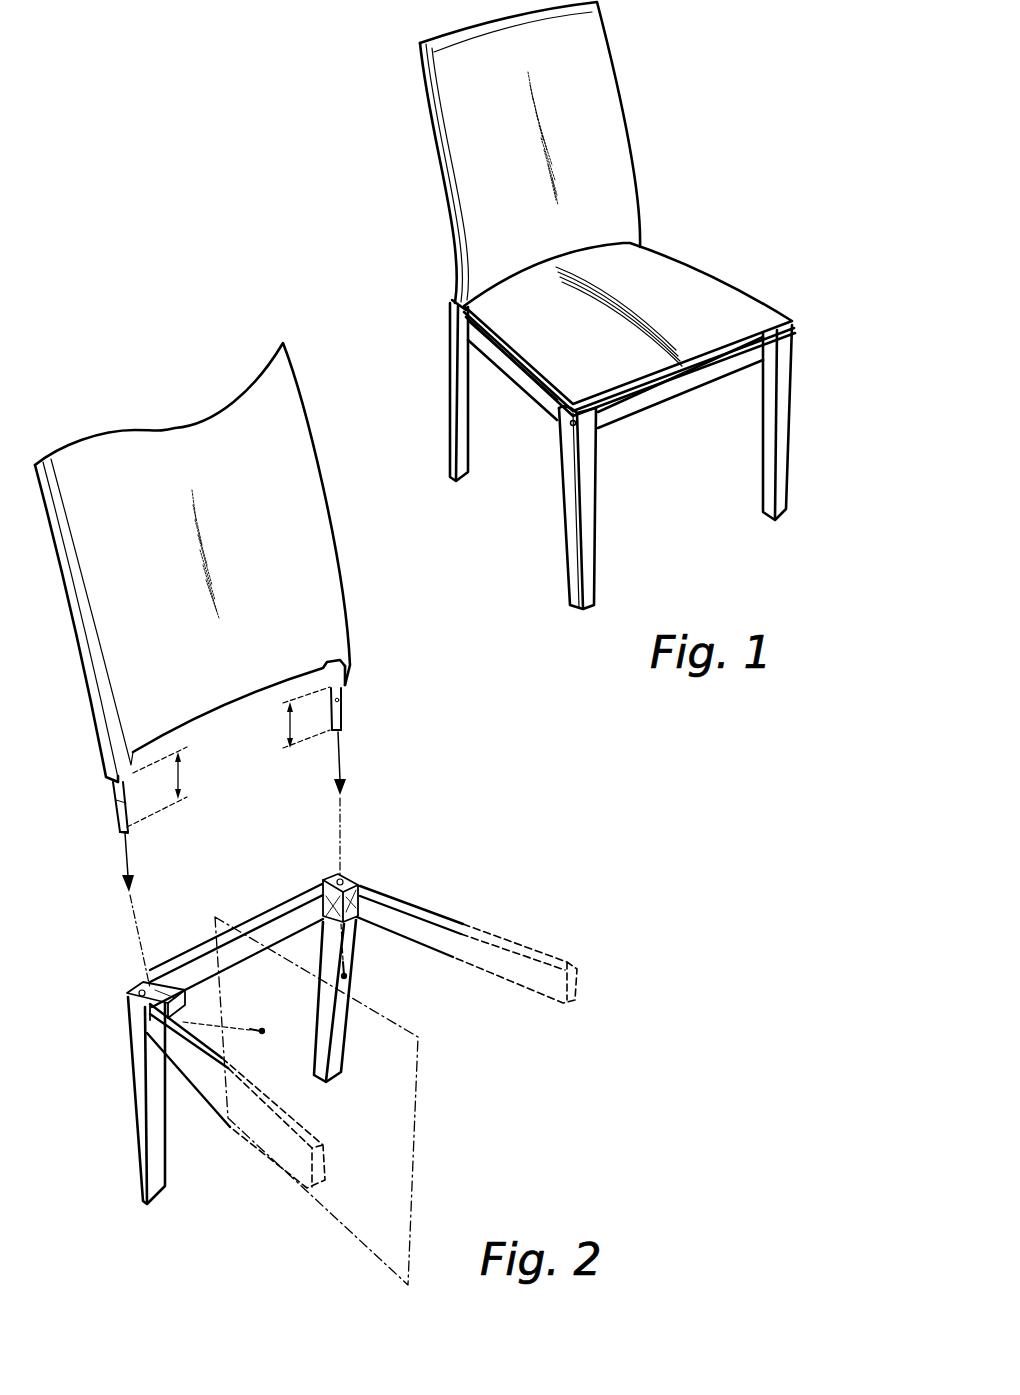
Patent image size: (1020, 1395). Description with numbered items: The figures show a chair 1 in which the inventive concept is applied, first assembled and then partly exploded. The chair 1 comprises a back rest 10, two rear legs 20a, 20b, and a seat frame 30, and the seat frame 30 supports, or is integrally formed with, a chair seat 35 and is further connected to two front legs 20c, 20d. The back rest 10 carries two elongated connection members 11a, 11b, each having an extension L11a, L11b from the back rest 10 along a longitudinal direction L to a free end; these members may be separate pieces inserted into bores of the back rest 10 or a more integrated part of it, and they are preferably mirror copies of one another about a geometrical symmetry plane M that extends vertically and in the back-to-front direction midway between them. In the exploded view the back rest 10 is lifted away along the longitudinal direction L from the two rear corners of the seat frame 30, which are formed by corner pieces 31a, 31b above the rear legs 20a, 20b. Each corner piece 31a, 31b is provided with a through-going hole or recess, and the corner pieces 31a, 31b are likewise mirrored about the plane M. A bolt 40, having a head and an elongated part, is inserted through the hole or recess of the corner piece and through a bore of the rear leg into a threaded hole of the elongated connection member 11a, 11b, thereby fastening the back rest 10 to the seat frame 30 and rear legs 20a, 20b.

In FIG. 1, the chair 1 is at (693, 74).
In FIG. 1, the back rest 10 is at (586, 58).
In FIG. 2, the back rest 10 is at (120, 667).
In FIG. 1, the chair seat 35 is at (594, 343).
In FIG. 1, the seat frame 30 is at (527, 387).
In FIG. 2, the seat frame 30 is at (270, 915).
In FIG. 1, the rear leg 20a is at (452, 445).
In FIG. 2, the rear leg 20a is at (130, 1198).
In FIG. 2, the rear leg 20b is at (358, 1025).
In FIG. 1, the front leg 20c is at (592, 562).
In FIG. 1, the front leg 20d is at (788, 492).
In FIG. 2, the elongated connection member 11a is at (115, 822).
In FIG. 2, the elongated connection member 11b is at (343, 720).
In FIG. 2, the longitudinal direction L is at (243, 860).
In FIG. 2, the extension L11a is at (190, 787).
In FIG. 2, the extension L11b is at (276, 717).
In FIG. 2, the corner piece 31a is at (172, 990).
In FIG. 2, the corner piece 31b is at (355, 886).
In FIG. 2, the bolt 40 is at (348, 976).
In FIG. 2, the geometrical symmetry plane M is at (420, 1077).